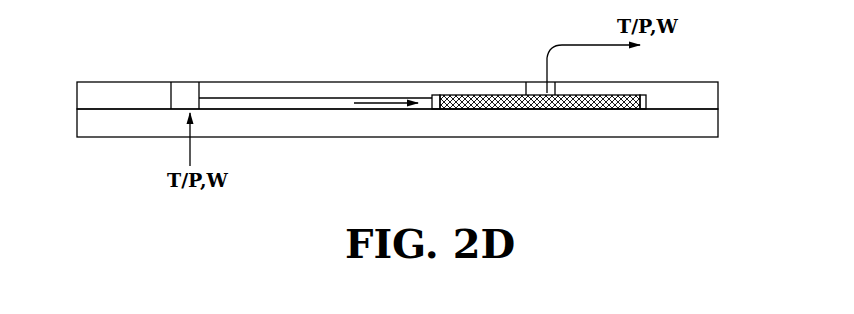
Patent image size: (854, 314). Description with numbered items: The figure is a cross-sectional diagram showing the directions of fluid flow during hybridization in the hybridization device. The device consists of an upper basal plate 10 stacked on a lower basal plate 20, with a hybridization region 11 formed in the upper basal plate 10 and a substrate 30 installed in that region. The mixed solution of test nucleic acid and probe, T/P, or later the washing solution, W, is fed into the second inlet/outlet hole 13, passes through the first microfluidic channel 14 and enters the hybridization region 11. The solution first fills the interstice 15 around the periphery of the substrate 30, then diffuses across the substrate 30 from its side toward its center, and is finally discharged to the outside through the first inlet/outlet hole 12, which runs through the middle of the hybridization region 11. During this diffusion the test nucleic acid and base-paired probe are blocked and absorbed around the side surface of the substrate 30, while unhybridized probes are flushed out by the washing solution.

The upper basal plate 10 is at (72, 97).
The lower basal plate 20 is at (72, 124).
The second inlet/outlet hole 13 is at (186, 99).
The first microfluidic channel 14 is at (297, 103).
The first inlet/outlet hole 12 is at (534, 92).
The hybridization region 11 is at (622, 93).
The substrate 30 is at (581, 103).
The interstice 15 is at (646, 101).